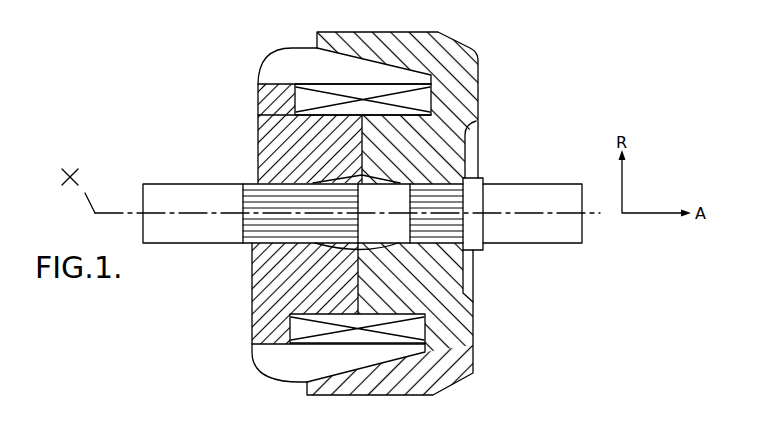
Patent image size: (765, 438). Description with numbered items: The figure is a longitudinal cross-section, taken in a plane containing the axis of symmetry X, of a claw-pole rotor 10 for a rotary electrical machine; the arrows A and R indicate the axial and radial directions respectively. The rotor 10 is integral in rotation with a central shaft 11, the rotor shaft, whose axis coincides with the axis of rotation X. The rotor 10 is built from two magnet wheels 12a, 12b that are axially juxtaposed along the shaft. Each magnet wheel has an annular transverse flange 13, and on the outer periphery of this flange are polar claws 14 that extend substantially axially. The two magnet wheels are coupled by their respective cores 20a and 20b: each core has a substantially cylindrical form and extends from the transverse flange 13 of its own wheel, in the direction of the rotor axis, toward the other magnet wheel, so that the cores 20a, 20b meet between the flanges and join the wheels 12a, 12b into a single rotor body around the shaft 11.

The rotor 10 is at (243, 305).
The central shaft 11 is at (543, 225).
The magnet wheel 12a is at (247, 132).
The magnet wheel 12b is at (489, 120).
The transverse flange 13 is at (278, 115).
The polar claws 14 is at (473, 48).
The core 20a is at (327, 168).
The core 20b is at (417, 270).